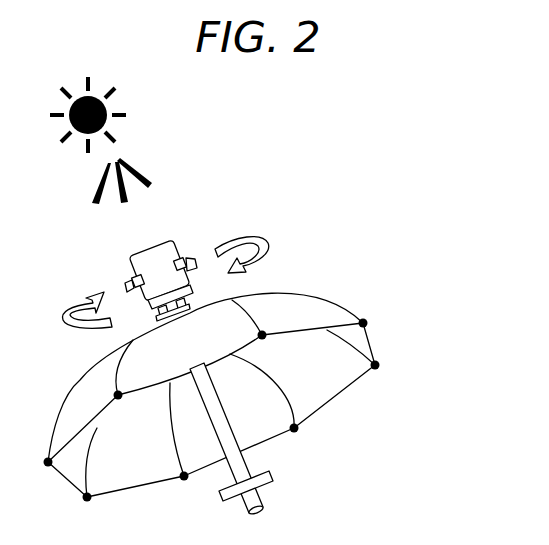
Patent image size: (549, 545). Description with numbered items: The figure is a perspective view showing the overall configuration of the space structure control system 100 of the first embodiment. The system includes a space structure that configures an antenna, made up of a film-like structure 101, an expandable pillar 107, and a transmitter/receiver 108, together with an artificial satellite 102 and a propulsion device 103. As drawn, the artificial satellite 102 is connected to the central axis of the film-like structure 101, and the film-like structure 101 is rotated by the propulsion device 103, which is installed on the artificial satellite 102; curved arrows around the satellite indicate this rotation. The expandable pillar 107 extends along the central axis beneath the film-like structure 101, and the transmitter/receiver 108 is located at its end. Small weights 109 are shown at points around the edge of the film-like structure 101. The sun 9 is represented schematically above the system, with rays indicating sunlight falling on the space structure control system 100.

The sun 9 is at (125, 106).
The space structure control system 100 is at (328, 188).
The film-like structure 101 is at (268, 368).
The artificial satellite 102 is at (138, 253).
The propulsion device 103 is at (130, 279).
The expandable pillar 107 is at (232, 433).
The transmitter/receiver 108 is at (273, 480).
The small weight 109 is at (378, 361).